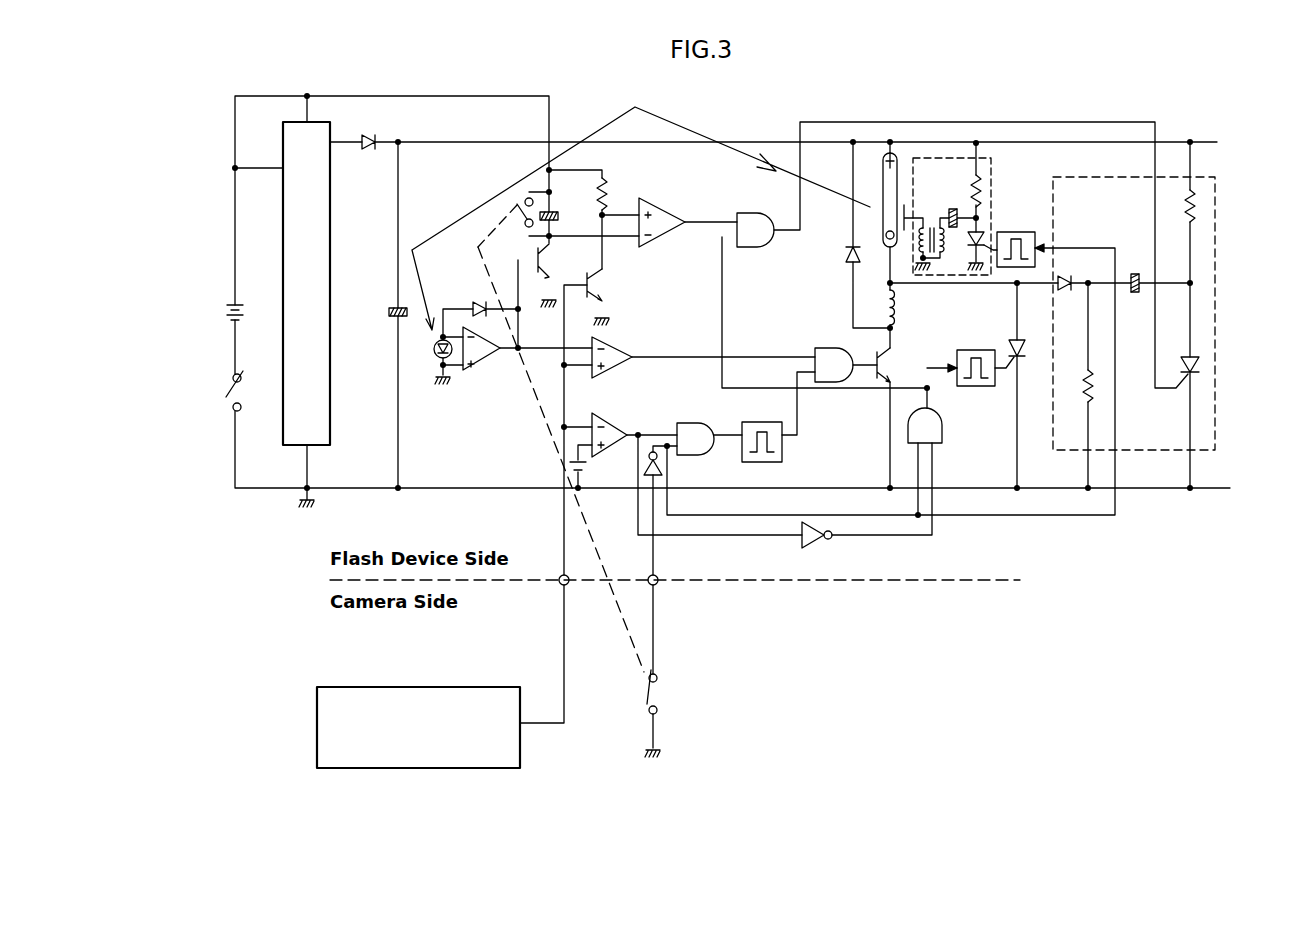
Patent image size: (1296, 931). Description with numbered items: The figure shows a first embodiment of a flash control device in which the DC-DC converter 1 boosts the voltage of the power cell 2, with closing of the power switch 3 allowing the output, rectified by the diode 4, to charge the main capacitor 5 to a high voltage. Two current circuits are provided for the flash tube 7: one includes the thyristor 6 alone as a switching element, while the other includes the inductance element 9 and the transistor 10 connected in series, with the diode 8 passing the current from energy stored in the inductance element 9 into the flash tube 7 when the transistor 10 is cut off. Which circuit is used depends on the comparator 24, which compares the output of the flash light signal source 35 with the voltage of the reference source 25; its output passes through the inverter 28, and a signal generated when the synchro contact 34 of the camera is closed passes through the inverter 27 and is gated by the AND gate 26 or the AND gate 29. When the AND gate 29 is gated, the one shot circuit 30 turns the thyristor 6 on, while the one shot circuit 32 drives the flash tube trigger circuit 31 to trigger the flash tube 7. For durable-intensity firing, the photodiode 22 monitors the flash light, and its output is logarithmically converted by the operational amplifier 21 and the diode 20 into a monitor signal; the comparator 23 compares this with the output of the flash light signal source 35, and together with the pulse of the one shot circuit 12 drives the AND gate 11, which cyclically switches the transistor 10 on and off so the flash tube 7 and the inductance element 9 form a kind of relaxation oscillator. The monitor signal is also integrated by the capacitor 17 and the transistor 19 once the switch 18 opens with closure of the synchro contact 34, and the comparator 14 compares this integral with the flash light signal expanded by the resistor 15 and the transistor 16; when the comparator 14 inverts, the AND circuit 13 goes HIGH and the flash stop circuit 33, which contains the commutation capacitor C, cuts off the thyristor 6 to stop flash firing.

The DC-DC converter 1 is at (330, 212).
The power cell 2 is at (232, 315).
The power switch 3 is at (230, 400).
The diode 4 is at (370, 138).
The main capacitor 5 is at (392, 311).
The thyristor 6 is at (1022, 342).
The flash tube 7 is at (883, 195).
The diode 8 is at (846, 255).
The inductance element 9 is at (896, 306).
The transistor 10 is at (886, 357).
The AND gate 11 is at (826, 348).
The one shot circuit 12 is at (748, 422).
The AND circuit 13 is at (756, 248).
The comparator 14 is at (660, 210).
The resistor 15 is at (604, 190).
The transistor 16 is at (598, 287).
The capacitor 17 is at (553, 214).
The switch 18 is at (520, 214).
The transistor 19 is at (546, 258).
The diode 20 is at (479, 303).
The operational amplifier 21 is at (480, 368).
The photodiode 22 is at (438, 360).
The comparator 23 is at (618, 346).
The comparator 24 is at (612, 424).
The reference source 25 is at (588, 466).
The AND gate 26 is at (683, 424).
The inverter 27 is at (661, 470).
The inverter 28 is at (823, 543).
The AND gate 29 is at (944, 432).
The one shot circuit 30 is at (972, 350).
The flash tube trigger circuit 31 is at (988, 170).
The one shot circuit 32 is at (1003, 232).
The flash stop circuit 33 is at (1154, 313).
The synchro contact 34 is at (642, 712).
The flash light signal source 35 is at (317, 712).
The commutation capacitor C is at (1133, 274).